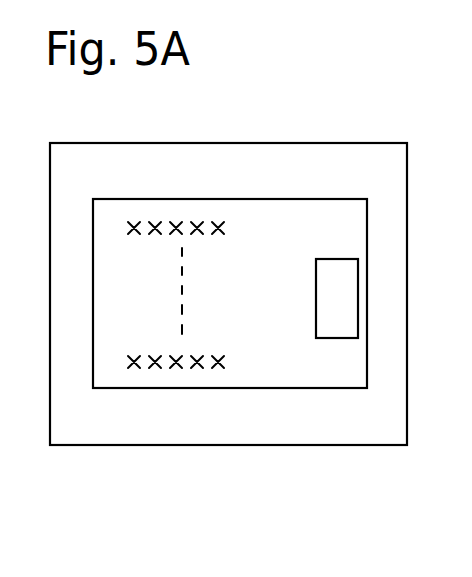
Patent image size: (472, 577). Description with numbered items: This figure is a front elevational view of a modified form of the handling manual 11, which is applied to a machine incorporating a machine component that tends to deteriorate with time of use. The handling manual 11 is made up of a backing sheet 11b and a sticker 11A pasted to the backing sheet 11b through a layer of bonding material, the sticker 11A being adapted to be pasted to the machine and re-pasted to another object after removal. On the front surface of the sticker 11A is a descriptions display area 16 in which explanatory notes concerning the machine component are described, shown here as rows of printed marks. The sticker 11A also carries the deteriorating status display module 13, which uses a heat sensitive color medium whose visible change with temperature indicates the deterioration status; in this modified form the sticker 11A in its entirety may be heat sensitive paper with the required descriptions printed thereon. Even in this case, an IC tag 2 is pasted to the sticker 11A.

The handling manual 11 is at (390, 37).
The backing sheet 11b is at (270, 162).
The sticker 11A is at (275, 226).
The deteriorating status display module 13 is at (305, 372).
The descriptions display area 16 is at (157, 365).
The IC tag 2 is at (344, 315).